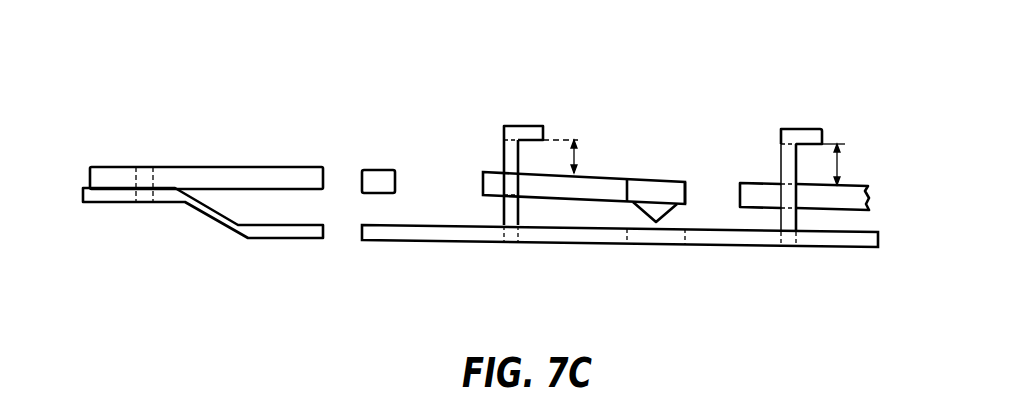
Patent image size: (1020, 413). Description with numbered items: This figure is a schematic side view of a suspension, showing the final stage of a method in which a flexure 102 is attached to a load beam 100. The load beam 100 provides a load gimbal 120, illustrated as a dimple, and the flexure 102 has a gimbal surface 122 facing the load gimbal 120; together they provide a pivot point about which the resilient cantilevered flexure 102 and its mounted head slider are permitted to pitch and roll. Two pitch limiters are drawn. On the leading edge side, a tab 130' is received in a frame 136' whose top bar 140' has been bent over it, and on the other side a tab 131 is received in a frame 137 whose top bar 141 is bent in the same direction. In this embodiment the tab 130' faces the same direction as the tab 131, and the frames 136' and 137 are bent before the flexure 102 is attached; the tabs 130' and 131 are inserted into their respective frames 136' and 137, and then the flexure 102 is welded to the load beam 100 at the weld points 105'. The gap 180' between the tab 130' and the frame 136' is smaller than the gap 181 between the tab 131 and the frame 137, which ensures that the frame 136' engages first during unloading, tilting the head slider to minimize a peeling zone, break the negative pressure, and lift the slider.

The load beam 100 is at (284, 165).
The flexure 102 is at (204, 223).
The weld points 105' is at (151, 157).
The load gimbal 120 is at (637, 210).
The gimbal surface 122 is at (678, 228).
The tab 130' is at (584, 161).
The frame 136' is at (479, 174).
The top bar 140' is at (551, 97).
The gap 180' is at (579, 134).
The frame 137 is at (781, 140).
The top bar 141 is at (808, 128).
The gap 181 is at (840, 163).
The tab 131 is at (866, 186).